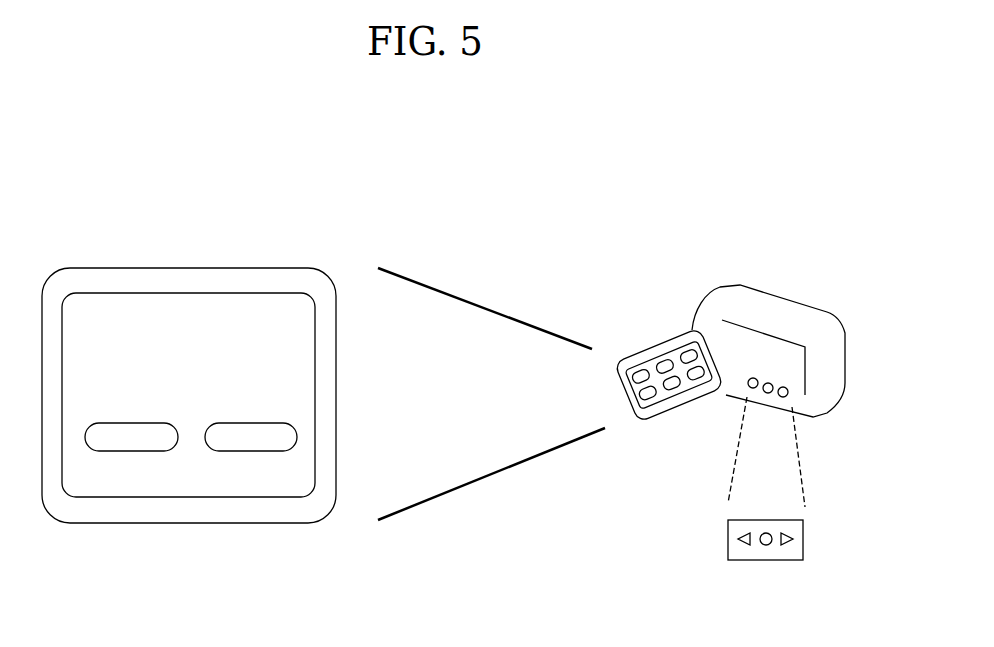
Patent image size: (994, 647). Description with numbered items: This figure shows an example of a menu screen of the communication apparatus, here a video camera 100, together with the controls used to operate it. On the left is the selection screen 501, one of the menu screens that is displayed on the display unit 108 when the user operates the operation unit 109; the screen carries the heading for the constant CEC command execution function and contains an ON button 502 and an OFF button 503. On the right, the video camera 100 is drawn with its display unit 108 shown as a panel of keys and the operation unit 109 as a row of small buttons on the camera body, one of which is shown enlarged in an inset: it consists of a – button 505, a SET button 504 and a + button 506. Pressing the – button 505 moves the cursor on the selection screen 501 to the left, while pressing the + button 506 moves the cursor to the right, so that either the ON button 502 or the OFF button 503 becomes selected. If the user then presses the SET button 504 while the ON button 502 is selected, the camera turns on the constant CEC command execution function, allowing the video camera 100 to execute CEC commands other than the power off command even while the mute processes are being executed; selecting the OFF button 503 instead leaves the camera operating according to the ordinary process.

The video camera 100 is at (735, 284).
The display unit 108 is at (653, 425).
The operation unit 109 is at (788, 394).
The selection screen 501 is at (192, 268).
The ON button 502 is at (131, 451).
The OFF button 503 is at (250, 451).
The SET button 504 is at (766, 546).
The – button 505 is at (738, 538).
The + button 506 is at (793, 540).